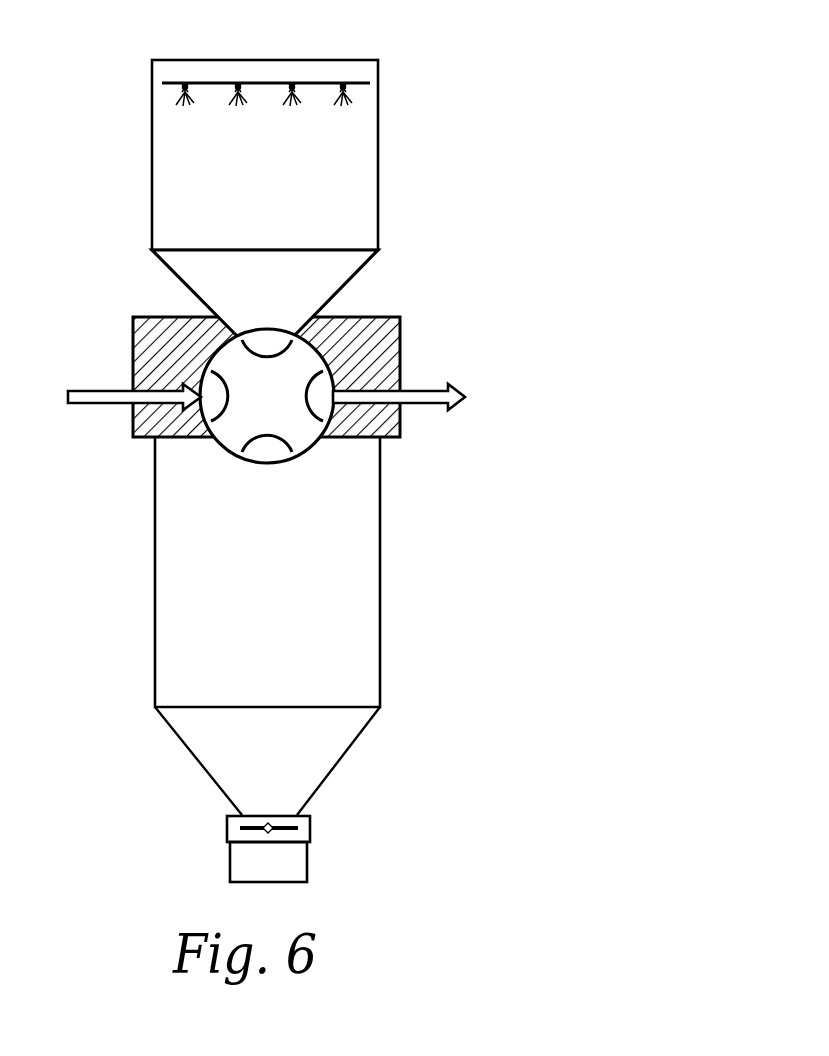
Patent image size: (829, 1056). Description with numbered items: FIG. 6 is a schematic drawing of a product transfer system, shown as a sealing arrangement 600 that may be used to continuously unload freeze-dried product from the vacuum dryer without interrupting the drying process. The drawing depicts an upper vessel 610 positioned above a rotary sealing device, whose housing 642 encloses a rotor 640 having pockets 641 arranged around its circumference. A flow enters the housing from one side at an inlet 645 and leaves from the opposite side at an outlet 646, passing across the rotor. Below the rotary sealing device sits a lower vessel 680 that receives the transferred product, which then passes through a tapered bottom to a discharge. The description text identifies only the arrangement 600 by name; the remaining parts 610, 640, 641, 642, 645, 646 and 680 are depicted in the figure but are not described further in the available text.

The sealing arrangement 600 is at (487, 288).
The upper wash vessel with spray nozzles 610 is at (362, 58).
The rotary valve 640 is at (215, 352).
The rotor pocket 641 is at (268, 338).
The valve housing 642 is at (132, 347).
The inlet flow 645 is at (86, 392).
The outlet flow 646 is at (425, 389).
The lower collection vessel 680 is at (378, 510).